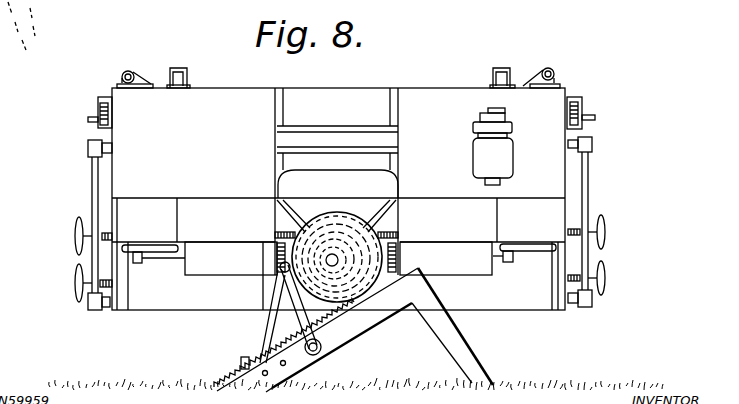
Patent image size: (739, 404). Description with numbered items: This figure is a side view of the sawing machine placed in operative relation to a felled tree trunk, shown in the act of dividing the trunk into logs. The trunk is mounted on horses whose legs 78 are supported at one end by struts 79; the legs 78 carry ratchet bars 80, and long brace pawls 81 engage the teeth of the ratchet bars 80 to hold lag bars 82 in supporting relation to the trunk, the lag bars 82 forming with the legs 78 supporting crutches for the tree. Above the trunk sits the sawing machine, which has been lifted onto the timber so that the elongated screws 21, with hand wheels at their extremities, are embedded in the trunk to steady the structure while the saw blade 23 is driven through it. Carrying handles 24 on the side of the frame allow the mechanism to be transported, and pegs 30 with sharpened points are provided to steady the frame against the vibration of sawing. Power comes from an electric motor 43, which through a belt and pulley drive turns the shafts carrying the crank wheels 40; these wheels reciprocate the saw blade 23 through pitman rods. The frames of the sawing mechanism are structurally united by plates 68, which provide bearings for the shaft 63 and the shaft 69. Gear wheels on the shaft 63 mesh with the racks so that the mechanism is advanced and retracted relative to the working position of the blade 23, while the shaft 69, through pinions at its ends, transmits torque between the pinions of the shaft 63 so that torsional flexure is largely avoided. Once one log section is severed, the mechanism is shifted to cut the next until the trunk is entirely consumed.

The elongated screw 21 is at (76, 236).
The saw blade 23 is at (399, 249).
The carrying handle 24 is at (93, 183).
The peg 30 is at (97, 108).
The crank wheel 40 is at (176, 247).
The electric motor 43 is at (508, 158).
The shaft 63 is at (335, 148).
The plate 68 is at (293, 107).
The shaft 69 is at (323, 133).
The leg 78 is at (384, 310).
The strut 79 is at (454, 326).
The ratchet bar 80 is at (252, 372).
The brace pawl 81 is at (272, 332).
The lag bar 82 is at (299, 316).